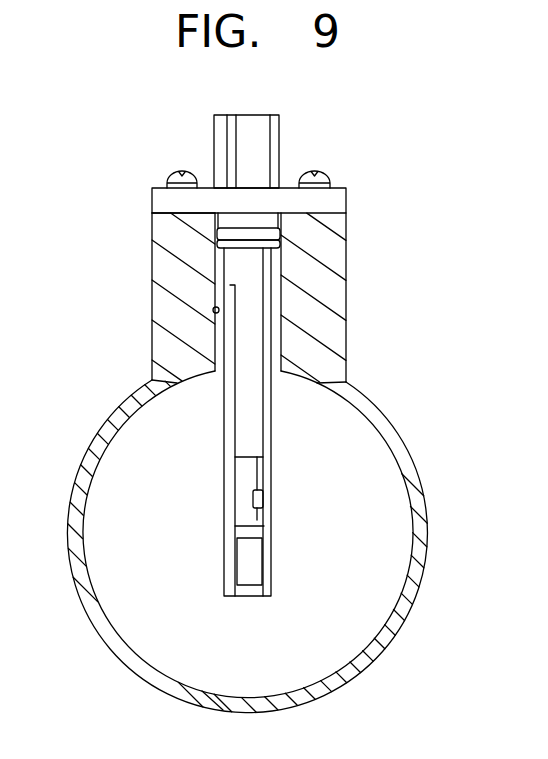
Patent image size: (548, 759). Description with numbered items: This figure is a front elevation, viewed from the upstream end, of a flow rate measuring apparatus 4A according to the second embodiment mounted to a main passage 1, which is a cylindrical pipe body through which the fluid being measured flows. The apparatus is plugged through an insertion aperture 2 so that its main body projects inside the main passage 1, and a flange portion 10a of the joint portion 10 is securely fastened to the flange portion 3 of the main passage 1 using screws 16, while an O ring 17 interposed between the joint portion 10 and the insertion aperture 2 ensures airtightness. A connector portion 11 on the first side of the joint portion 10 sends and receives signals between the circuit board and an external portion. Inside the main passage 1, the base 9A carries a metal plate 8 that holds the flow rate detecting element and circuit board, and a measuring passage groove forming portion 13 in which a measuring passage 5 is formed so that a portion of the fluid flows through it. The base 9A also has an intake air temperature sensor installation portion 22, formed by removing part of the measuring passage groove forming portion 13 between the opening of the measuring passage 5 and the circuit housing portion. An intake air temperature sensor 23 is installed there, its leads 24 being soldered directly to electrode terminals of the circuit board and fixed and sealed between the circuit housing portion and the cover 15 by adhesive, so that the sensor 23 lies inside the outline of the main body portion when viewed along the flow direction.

The main passage 1 is at (84, 446).
The insertion aperture 2 is at (212, 310).
The flange portion 3 is at (168, 270).
The flow rate measuring apparatus 4A is at (254, 160).
The measuring passage 5 is at (253, 567).
The metal plate 8 is at (228, 354).
The base 9A is at (256, 413).
The joint portion 10 is at (270, 224).
The flange portion 10a is at (345, 199).
The connector portion 11 is at (210, 155).
The measuring passage groove forming portion 13 is at (355, 579).
The cover 15 is at (270, 287).
The screws 16 is at (168, 176).
The O ring 17 is at (168, 236).
The intake air temperature sensor installation portion 22 is at (267, 515).
The intake air temperature sensor 23 is at (260, 502).
The leads 24 is at (258, 473).